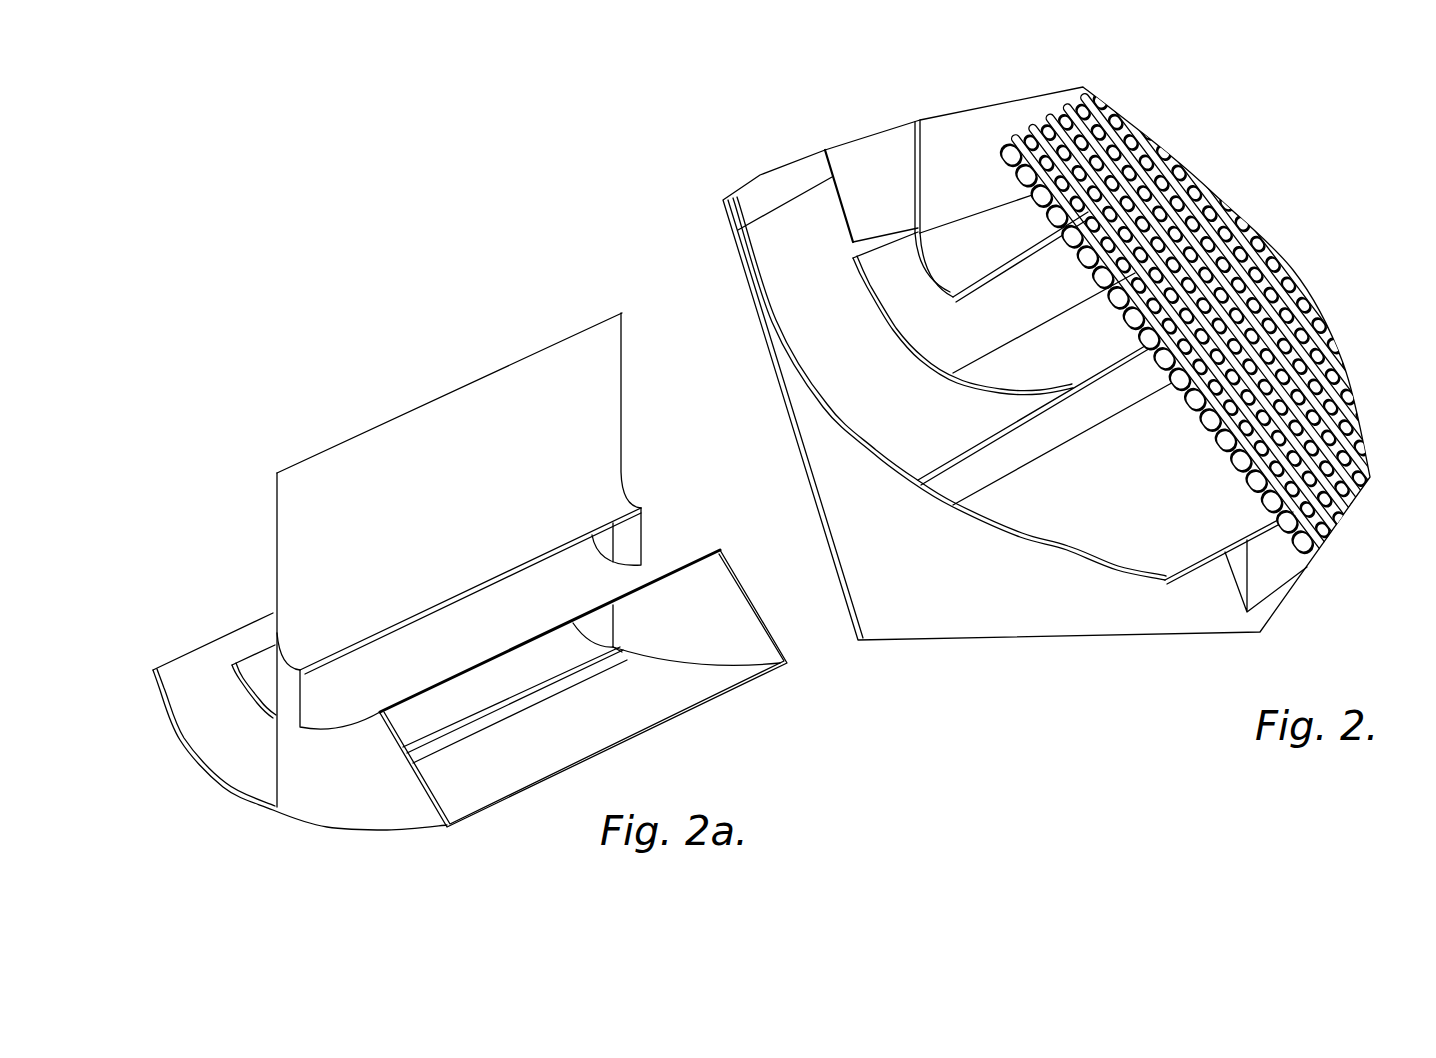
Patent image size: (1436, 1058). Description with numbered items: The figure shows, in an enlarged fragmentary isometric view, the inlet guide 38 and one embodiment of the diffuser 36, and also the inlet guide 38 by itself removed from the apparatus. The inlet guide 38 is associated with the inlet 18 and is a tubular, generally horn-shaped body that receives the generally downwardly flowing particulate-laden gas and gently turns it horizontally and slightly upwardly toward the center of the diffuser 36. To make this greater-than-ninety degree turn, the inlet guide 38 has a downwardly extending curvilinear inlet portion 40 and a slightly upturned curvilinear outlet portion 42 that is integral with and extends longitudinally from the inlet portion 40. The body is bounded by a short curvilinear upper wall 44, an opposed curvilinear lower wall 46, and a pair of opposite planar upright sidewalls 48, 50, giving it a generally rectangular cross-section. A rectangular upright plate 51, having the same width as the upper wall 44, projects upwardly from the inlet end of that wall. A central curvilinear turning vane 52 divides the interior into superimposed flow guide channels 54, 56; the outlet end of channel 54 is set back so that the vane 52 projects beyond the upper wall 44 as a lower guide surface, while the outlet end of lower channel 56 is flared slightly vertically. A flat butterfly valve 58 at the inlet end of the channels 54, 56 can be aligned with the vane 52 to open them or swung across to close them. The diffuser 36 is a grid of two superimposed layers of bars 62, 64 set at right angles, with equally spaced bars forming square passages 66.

In FIG. 2, the inlet 18 is at (747, 198).
In FIG. 2, the diffuser 36 is at (1189, 326).
In FIG. 2A, the inlet guide 38 is at (283, 452).
In FIG. 2A, the inlet portion 40 is at (180, 740).
In FIG. 2, the inlet portion 40 is at (820, 408).
In FIG. 2A, the outlet portion 42 is at (393, 835).
In FIG. 2, the outlet portion 42 is at (1113, 575).
In FIG. 2A, the upper wall 44 is at (388, 600).
In FIG. 2, the upper wall 44 is at (929, 277).
In FIG. 2A, the lower wall 46 is at (235, 765).
In FIG. 2, the lower wall 46 is at (905, 452).
In FIG. 2A, the sidewall 48 is at (313, 810).
In FIG. 2A, the sidewall 50 is at (720, 592).
In FIG. 2A, the upright plate 51 is at (510, 368).
In FIG. 2, the upright plate 51 is at (937, 123).
In FIG. 2A, the turning vane 52 is at (268, 685).
In FIG. 2, the turning vane 52 is at (918, 360).
In FIG. 2A, the flow guide channel 54 is at (592, 567).
In FIG. 2, the flow guide channel 54 is at (1057, 373).
In FIG. 2A, the flow guide channel 56 is at (607, 733).
In FIG. 2, the flow guide channel 56 is at (1163, 563).
In FIG. 2, the butterfly valve 58 is at (863, 145).
In FIG. 2, the bars 62 is at (1240, 450).
In FIG. 2, the bars 64 is at (1207, 425).
In FIG. 2, the passages 66 is at (1287, 480).